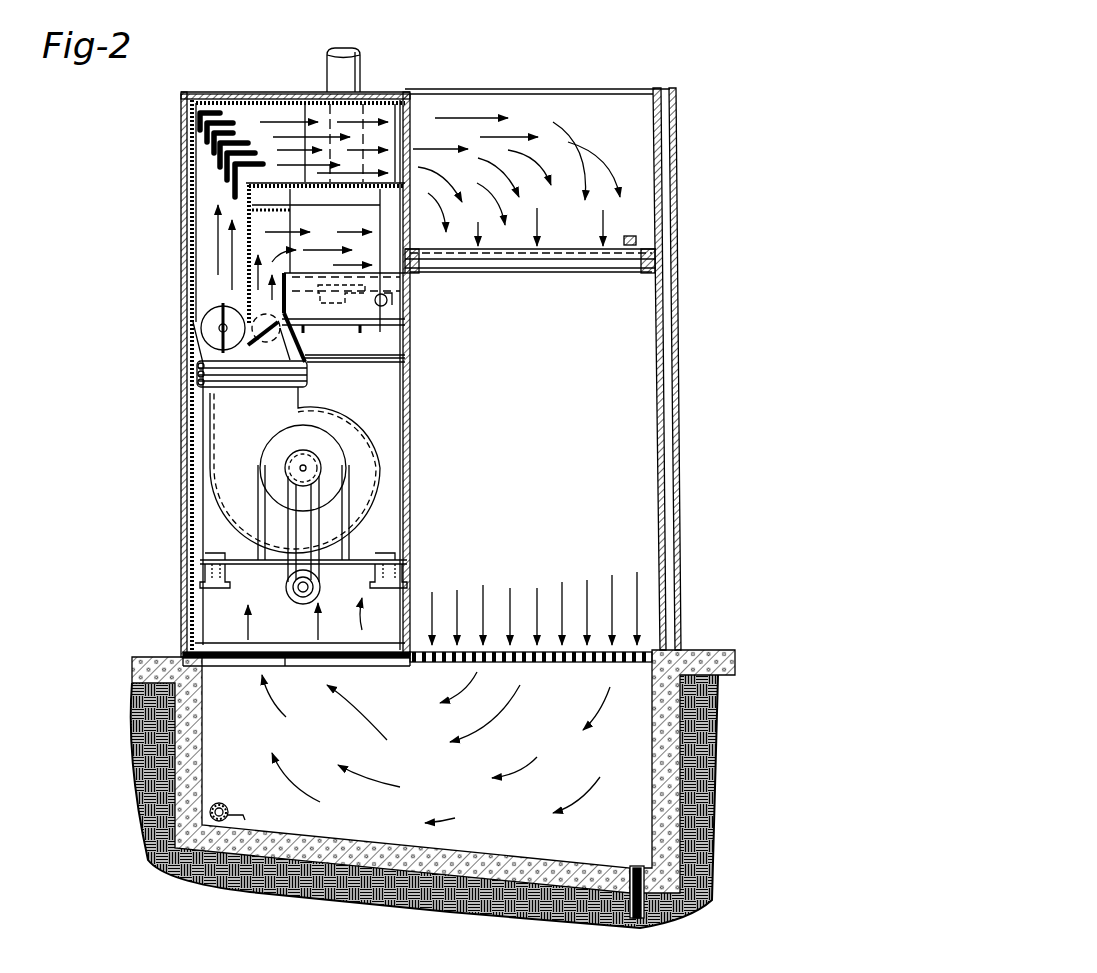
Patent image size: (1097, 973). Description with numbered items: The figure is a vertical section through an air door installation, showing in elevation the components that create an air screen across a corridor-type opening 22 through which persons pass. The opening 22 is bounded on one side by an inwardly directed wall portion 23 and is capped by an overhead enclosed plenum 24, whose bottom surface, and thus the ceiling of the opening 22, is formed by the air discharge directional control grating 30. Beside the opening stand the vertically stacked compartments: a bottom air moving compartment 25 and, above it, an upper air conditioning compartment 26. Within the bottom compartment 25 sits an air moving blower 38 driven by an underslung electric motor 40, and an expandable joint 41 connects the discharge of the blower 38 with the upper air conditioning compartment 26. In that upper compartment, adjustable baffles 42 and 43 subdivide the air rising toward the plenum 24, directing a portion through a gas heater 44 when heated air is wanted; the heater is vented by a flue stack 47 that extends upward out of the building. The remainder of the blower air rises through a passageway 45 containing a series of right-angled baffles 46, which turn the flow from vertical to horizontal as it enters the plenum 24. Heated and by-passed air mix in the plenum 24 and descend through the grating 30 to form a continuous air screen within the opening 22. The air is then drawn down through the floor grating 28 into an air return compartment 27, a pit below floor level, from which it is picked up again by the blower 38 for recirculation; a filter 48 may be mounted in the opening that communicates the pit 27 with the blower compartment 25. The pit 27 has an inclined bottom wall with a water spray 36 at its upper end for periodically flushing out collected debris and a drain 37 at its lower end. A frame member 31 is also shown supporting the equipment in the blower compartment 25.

The corridor-type opening 22 is at (650, 434).
The inwardly directed wall portion 23 is at (670, 602).
The overhead enclosed plenum 24 is at (612, 96).
The bottom air moving compartment 25 is at (392, 506).
The upper air conditioning compartment 26 is at (205, 243).
The air return compartment 27 is at (643, 792).
The floor grating 28 is at (505, 664).
The air discharge directional control grating 30 is at (583, 252).
The frame 31 is at (410, 548).
The water spray 36 is at (227, 806).
The drain 37 is at (634, 868).
The air moving blower 38 is at (355, 432).
The underslung electric motor 40 is at (321, 594).
The expandable joint 41 is at (302, 382).
The adjustable baffle 42 is at (205, 326).
The adjustable baffle 43 is at (262, 342).
The gas heater 44 is at (374, 268).
The passageway 45 is at (243, 100).
The right-angled baffles 46 is at (236, 140).
The flue stack 47 is at (362, 80).
The filter 48 is at (283, 660).